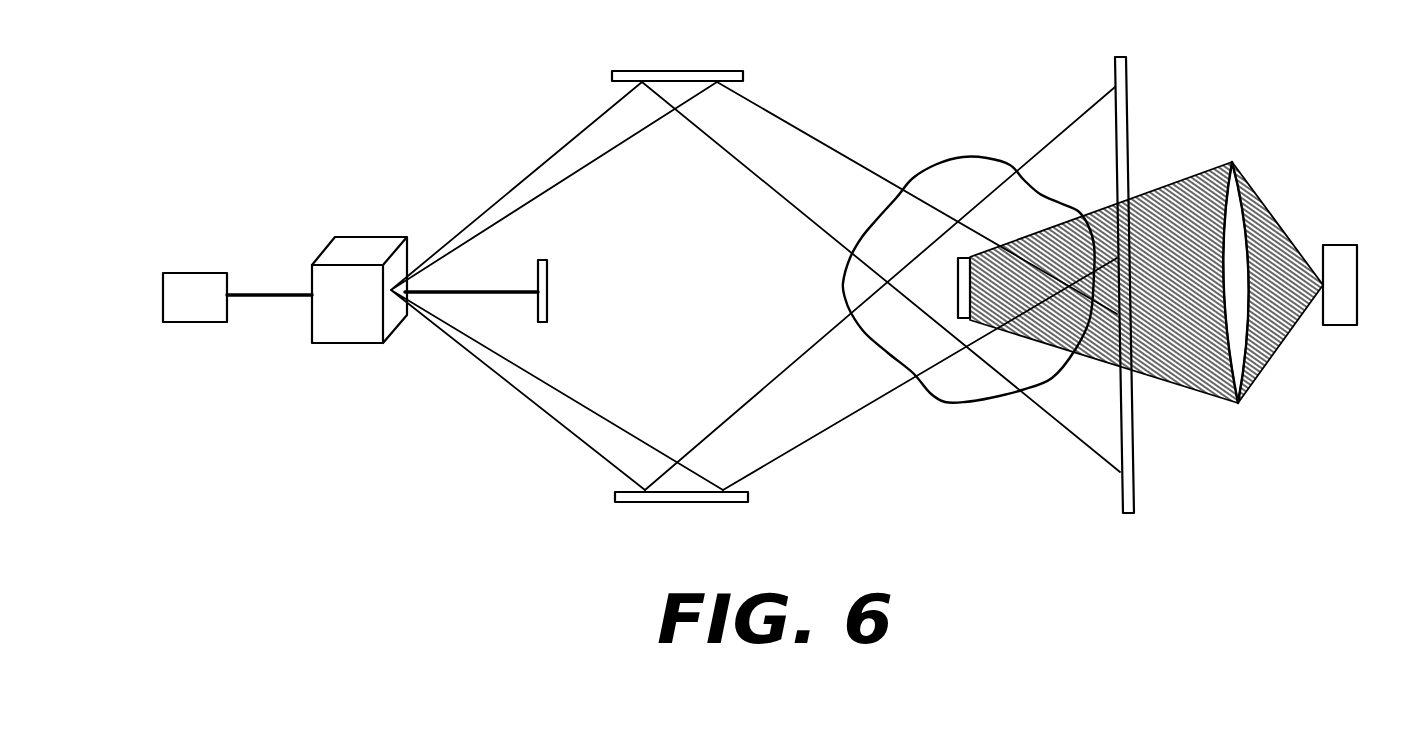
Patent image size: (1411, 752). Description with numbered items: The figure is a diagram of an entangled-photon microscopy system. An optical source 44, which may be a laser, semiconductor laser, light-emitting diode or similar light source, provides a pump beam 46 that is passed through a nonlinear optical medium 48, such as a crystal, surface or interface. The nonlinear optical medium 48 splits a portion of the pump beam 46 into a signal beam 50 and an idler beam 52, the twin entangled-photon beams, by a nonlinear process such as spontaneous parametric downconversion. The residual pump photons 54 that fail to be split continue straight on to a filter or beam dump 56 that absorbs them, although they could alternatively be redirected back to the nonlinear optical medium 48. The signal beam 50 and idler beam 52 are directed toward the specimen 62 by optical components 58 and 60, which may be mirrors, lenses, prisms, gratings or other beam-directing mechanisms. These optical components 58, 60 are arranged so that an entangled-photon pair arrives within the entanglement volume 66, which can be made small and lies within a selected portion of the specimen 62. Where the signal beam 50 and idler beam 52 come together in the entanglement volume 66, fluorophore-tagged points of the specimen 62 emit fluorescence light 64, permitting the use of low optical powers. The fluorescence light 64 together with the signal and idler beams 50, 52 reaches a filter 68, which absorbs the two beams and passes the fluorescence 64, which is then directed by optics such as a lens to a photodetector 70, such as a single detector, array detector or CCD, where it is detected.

The optical source 44 is at (197, 272).
The pump beam 46 is at (275, 298).
The nonlinear optical medium 48 is at (360, 245).
The signal beam 50 is at (585, 129).
The idler beam 52 is at (557, 421).
The residual pump photons 54 is at (457, 292).
The filter (or beam dump) 56 is at (548, 310).
The optical component 58 is at (667, 70).
The optical component 60 is at (700, 502).
The specimen 62 is at (943, 403).
The fluorescence light 64 is at (1183, 387).
The entanglement volume 66 is at (957, 277).
The filter 68 is at (1135, 497).
The photodetector 70 is at (1335, 243).